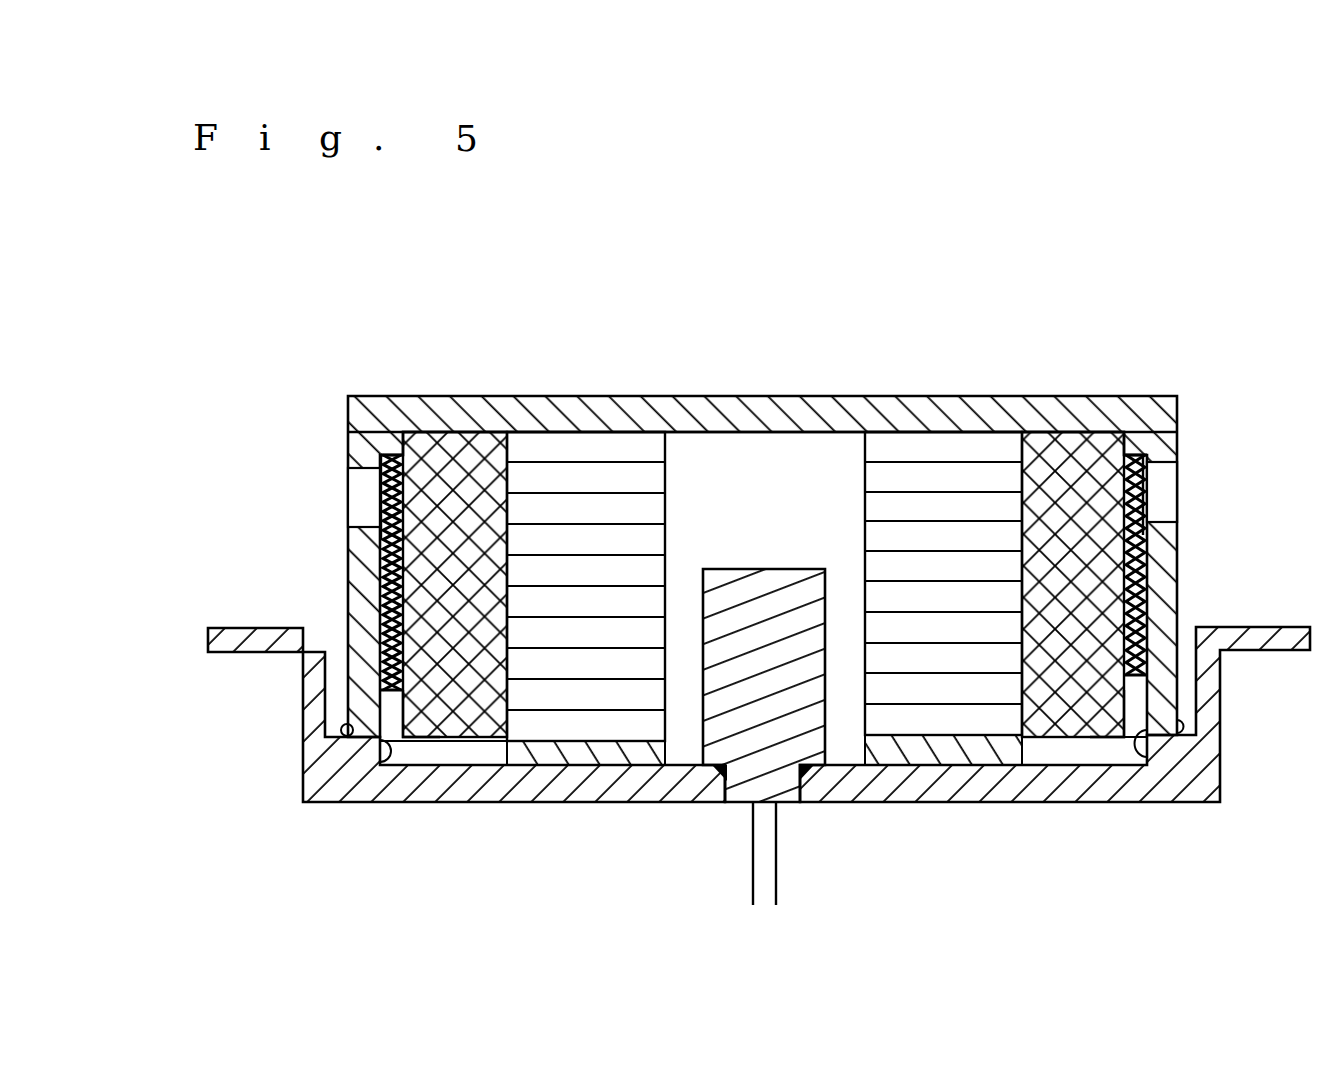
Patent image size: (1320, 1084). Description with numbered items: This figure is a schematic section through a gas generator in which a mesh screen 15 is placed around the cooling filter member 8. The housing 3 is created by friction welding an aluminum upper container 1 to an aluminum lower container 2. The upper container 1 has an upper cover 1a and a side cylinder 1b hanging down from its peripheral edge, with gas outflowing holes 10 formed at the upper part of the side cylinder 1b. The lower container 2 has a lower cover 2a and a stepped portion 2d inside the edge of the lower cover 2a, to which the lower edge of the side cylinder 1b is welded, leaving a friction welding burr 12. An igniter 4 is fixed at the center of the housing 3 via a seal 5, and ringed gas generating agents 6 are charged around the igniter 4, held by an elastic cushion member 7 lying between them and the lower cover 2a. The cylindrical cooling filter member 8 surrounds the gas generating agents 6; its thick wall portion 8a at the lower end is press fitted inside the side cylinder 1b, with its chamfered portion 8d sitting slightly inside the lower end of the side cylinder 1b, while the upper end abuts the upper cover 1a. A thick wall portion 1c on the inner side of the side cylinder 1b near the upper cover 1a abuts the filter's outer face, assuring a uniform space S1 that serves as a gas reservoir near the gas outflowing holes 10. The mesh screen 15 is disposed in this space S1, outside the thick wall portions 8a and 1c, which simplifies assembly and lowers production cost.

The upper container 1 is at (769, 514).
The upper cover 1a is at (905, 420).
The side cylinder 1b is at (1168, 585).
The thick wall portion 1c is at (388, 447).
The lower container 2 is at (759, 790).
The lower cover 2a is at (965, 797).
The stepped portion 2d is at (345, 758).
The housing 3 is at (769, 489).
The igniter 4 is at (783, 580).
The seal 5 is at (705, 775).
The gas generating agents 6 is at (637, 447).
The cushion member 7 is at (545, 760).
The cooling filter member 8 is at (771, 606).
The thick wall portion 8a is at (395, 700).
The chamfered portion 8d is at (1135, 742).
The gas outflowing holes 10 is at (348, 488).
The friction welding burr 12 is at (397, 750).
The mesh screen 15 is at (400, 660).
The space S1 is at (383, 575).